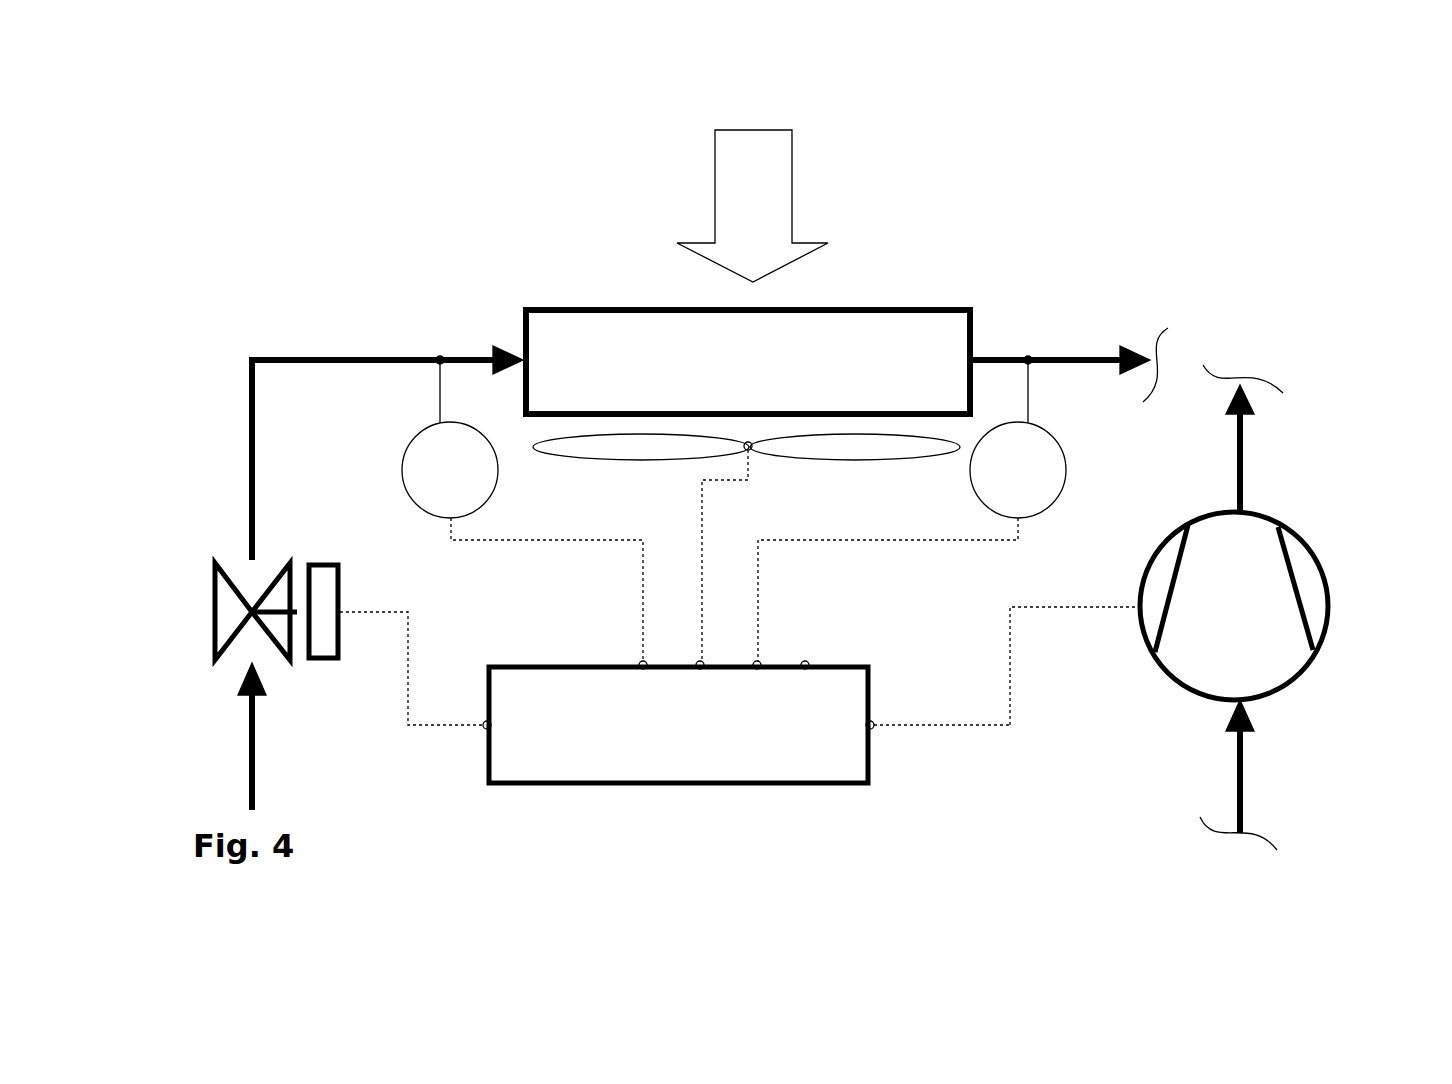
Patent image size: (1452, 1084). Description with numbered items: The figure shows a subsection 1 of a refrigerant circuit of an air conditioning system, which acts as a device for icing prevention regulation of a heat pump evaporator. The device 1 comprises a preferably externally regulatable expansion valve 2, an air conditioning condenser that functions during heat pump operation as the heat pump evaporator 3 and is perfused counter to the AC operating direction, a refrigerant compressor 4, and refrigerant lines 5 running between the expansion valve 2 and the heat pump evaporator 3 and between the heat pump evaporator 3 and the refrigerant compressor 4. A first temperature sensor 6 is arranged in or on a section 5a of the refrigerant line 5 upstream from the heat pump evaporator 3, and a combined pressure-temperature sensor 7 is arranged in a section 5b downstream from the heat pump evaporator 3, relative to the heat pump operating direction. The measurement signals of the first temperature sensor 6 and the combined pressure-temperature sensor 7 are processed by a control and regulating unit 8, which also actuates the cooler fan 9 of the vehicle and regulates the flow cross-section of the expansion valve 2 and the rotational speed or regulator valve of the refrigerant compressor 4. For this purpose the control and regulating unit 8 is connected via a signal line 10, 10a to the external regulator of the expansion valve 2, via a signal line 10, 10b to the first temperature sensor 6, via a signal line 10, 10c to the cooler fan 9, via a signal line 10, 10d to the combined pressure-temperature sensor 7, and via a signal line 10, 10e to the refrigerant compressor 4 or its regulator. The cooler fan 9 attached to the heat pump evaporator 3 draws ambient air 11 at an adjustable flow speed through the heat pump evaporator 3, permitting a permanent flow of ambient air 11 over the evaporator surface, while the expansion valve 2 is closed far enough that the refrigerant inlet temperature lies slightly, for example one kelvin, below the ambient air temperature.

The subsection of a refrigerant circuit 1 is at (350, 250).
The expansion valve 2 is at (247, 582).
The heat pump evaporator 3 is at (625, 355).
The refrigerant compressor 4 is at (1272, 553).
The refrigerant lines 5 is at (247, 433).
The section of the refrigerant line upstream from the heat pump evaporator 5a is at (440, 360).
The section of the refrigerant line downstream from the heat pump evaporator 5b is at (1028, 360).
The first temperature sensor 6 is at (433, 432).
The combined pressure-temperature sensor 7 is at (1038, 433).
The control and regulating unit 8 is at (702, 748).
The cooler fan 9 is at (727, 447).
The signal line 10 is at (903, 725).
The signal line to the expansion valve 10a is at (410, 658).
The signal line to the first temperature sensor 10b is at (643, 582).
The signal line to the cooler fan 10c is at (702, 543).
The signal line to the combined pressure-temperature sensor 10d is at (827, 542).
The signal line to the refrigerant compressor 10e is at (1012, 677).
The ambient air 11 is at (750, 180).